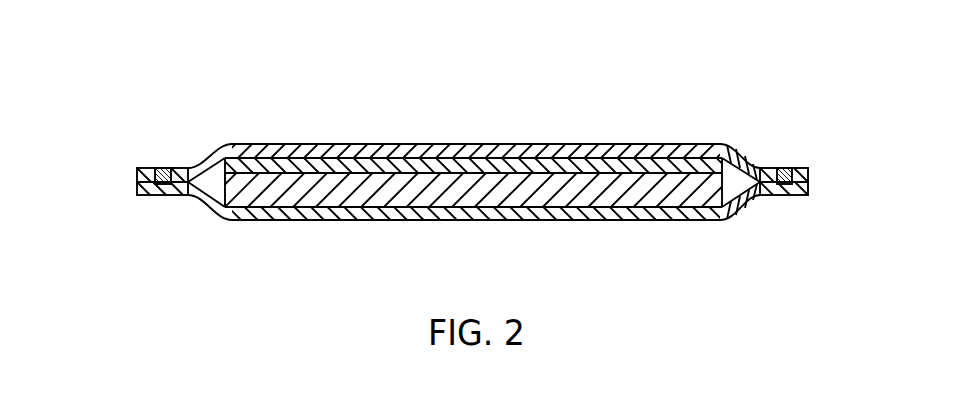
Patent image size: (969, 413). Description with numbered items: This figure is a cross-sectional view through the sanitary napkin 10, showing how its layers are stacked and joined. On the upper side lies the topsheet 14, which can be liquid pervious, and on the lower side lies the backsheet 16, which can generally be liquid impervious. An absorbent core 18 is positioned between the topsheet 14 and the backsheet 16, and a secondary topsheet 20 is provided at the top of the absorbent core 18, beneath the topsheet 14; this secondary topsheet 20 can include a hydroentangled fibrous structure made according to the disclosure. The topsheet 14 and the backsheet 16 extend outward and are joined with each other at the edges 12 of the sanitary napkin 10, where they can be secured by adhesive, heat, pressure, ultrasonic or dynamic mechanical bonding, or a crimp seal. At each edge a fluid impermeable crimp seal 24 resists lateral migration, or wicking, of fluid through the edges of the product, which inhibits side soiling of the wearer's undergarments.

The sanitary napkin 10 is at (470, 68).
The edges 12 is at (122, 183).
The topsheet 14 is at (342, 151).
The backsheet 16 is at (456, 213).
The absorbent core 18 is at (535, 176).
The secondary topsheet 20 is at (595, 164).
The fluid impermeable crimp seal 24 is at (163, 168).